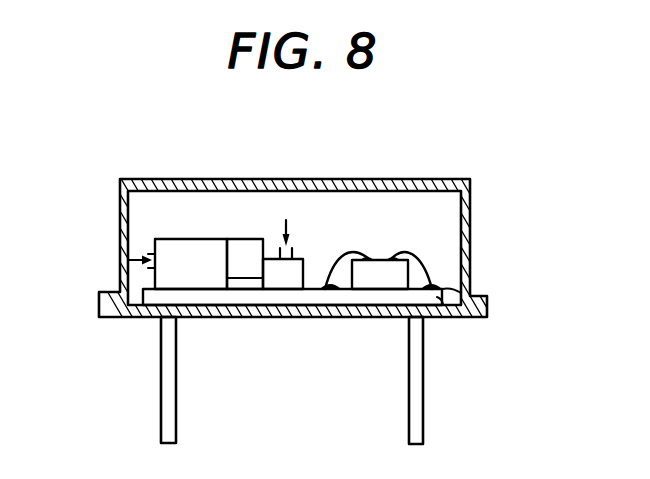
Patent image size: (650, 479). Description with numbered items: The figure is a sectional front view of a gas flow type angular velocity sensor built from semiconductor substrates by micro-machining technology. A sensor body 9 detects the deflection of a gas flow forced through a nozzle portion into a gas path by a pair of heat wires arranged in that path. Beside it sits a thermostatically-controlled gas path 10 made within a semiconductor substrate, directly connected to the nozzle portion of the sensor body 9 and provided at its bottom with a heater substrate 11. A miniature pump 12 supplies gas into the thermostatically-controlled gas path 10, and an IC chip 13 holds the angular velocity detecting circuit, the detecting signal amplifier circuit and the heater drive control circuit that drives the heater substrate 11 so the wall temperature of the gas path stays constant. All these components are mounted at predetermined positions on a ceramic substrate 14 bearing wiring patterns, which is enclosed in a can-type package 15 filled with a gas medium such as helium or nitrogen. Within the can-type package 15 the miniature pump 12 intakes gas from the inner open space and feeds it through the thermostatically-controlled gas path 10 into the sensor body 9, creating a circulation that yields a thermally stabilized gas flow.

The sensor body 9 is at (181, 252).
The thermostatically-controlled gas path 10 is at (241, 249).
The heater substrate 11 is at (246, 284).
The miniature pump 12 is at (300, 258).
The IC chip 13 is at (377, 270).
The ceramic substrate 14 is at (487, 296).
The can-type package 15 is at (120, 231).